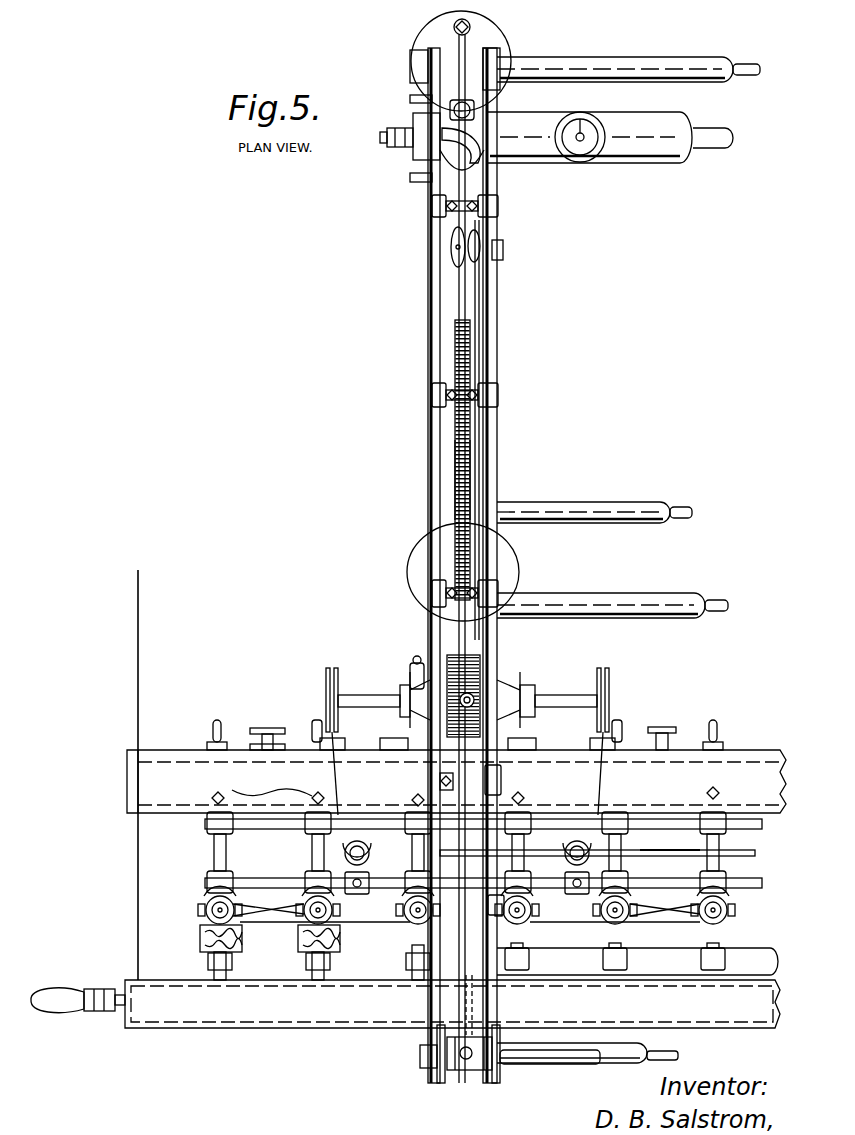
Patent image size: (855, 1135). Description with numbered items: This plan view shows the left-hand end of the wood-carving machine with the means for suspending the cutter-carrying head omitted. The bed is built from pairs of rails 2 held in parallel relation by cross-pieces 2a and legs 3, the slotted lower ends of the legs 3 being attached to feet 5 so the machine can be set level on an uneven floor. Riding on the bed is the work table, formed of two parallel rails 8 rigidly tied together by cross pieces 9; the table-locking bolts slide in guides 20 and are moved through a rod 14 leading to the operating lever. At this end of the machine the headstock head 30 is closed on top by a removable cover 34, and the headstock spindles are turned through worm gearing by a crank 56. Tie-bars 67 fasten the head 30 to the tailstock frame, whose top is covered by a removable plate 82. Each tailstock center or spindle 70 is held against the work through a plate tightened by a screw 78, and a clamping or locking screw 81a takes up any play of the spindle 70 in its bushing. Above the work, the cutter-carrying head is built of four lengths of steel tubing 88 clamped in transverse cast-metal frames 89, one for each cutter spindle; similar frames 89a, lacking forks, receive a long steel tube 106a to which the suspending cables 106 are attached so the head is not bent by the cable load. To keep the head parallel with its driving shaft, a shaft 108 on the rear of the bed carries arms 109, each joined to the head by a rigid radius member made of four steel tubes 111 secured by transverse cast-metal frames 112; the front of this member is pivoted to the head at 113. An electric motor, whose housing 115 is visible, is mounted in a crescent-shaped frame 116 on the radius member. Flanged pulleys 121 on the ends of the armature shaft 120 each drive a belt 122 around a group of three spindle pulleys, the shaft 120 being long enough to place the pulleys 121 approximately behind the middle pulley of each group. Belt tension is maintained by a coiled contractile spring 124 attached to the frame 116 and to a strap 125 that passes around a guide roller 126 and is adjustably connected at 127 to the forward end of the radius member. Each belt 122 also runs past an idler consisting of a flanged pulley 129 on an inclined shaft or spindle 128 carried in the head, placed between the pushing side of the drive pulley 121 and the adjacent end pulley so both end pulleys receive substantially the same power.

The rails 2 is at (434, 49).
The cross-pieces 2a is at (630, 60).
The legs 3 is at (500, 53).
The feet 5 is at (413, 42).
The rails 8 is at (466, 48).
The cross pieces 9 is at (610, 502).
The rod 14 is at (565, 1064).
The guides 20 is at (500, 1068).
The head 30 is at (452, 1017).
The removable cover 34 is at (308, 1005).
The crank 56 is at (85, 989).
The tie-bars 67 is at (137, 905).
The center or spindle 70 is at (217, 720).
The screw 78 is at (267, 728).
The clamping or locking screw 81a is at (219, 792).
The removable plate 82 is at (278, 785).
The steel tubing 88 is at (762, 822).
The transverse cast-metal frames 89 is at (720, 852).
The frames 89a is at (498, 915).
The cables 106 is at (672, 850).
The steel tube 106a is at (657, 853).
The shaft 108 is at (652, 164).
The arms 109 is at (500, 164).
The steel tubes 111 is at (428, 459).
The transverse cast-metal frames 112 is at (498, 210).
The pivot 113 is at (420, 797).
The motor housing 115 is at (505, 680).
The crescent-shaped frame 116 is at (450, 670).
The armature shaft 120 is at (365, 695).
The flanged pulleys 121 is at (328, 668).
The belt 122 is at (337, 745).
The coiled contractile spring 124 is at (455, 482).
The strap 125 is at (470, 345).
The guide roller 126 is at (456, 247).
The adjustable connection 127 is at (524, 795).
The shaft or spindle 128 is at (365, 895).
The flanged pulley 129 is at (370, 853).